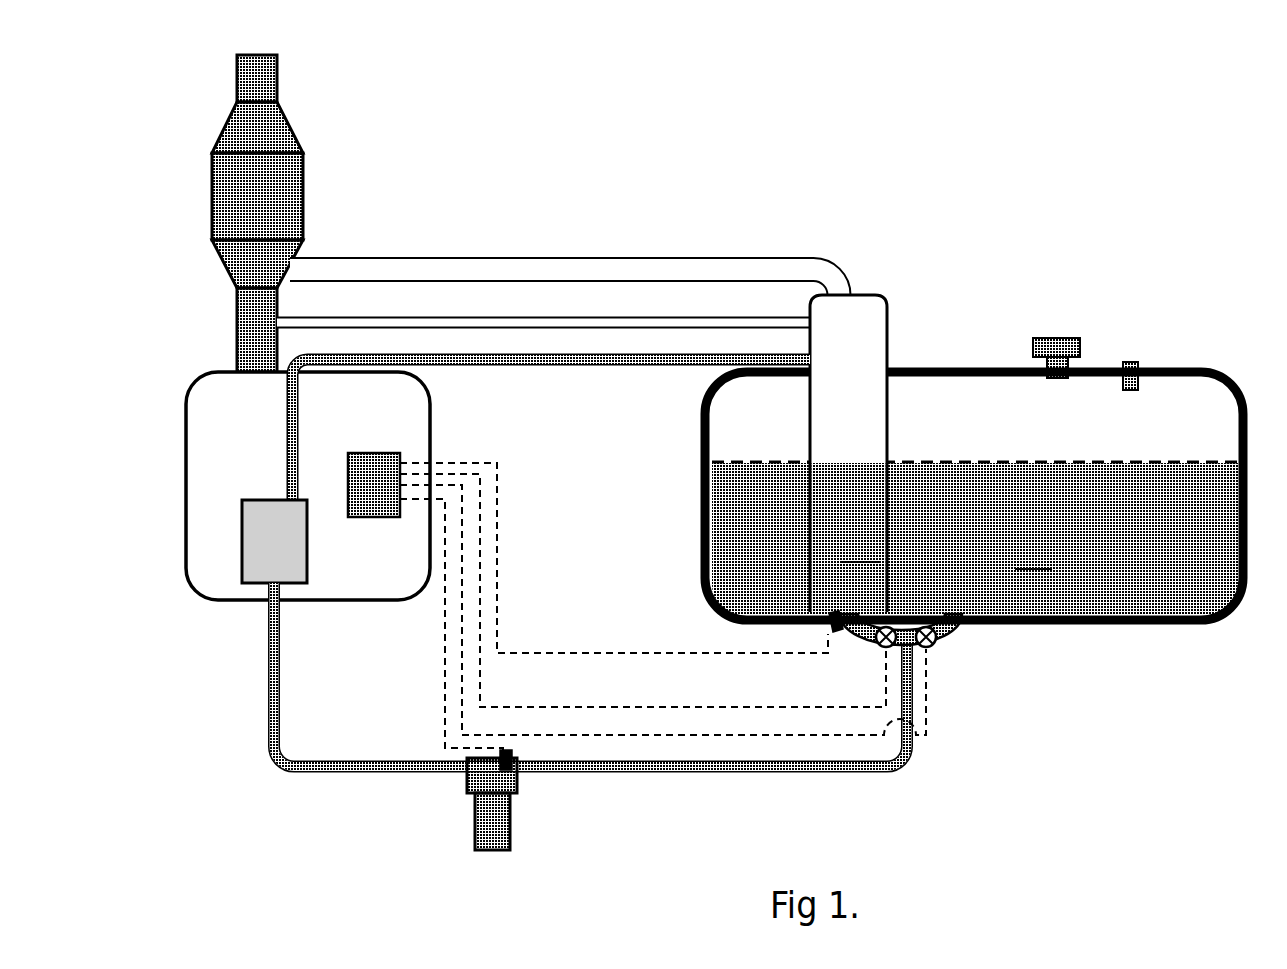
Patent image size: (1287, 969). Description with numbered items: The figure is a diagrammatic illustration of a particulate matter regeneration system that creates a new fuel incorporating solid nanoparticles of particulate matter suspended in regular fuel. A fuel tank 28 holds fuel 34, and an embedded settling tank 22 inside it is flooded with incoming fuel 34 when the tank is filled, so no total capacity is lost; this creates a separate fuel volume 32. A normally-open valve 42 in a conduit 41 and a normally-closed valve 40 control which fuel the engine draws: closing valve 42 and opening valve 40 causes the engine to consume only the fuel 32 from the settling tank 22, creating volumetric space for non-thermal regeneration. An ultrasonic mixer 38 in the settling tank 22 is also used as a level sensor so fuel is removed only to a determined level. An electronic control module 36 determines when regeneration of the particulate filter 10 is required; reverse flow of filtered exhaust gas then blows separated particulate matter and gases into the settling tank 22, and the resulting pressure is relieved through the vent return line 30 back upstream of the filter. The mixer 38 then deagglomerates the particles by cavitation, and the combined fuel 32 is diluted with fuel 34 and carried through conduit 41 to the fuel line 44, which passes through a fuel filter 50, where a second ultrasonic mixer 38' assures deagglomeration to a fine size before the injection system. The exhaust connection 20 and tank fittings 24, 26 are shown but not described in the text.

The particulate filter 10 is at (303, 168).
The exhaust gas line 20 is at (843, 270).
The embedded settling tank 22 is at (888, 338).
The filler cap 24 is at (1070, 338).
The vent 26 is at (1138, 365).
The fuel tank 28 is at (705, 443).
The vent return line 30 is at (649, 318).
The fuel 32 is at (860, 545).
The fuel 34 is at (975, 539).
The electronic control module 36 is at (365, 453).
The ultrasonic mixer 38 is at (621, 563).
The second ultrasonic mixer 38' is at (503, 675).
The normally-closed valve 40 is at (878, 648).
The conduit 41 is at (945, 640).
The normally-open valve 42 is at (937, 650).
The fuel line 44 is at (705, 775).
The fuel filter 50 is at (473, 825).